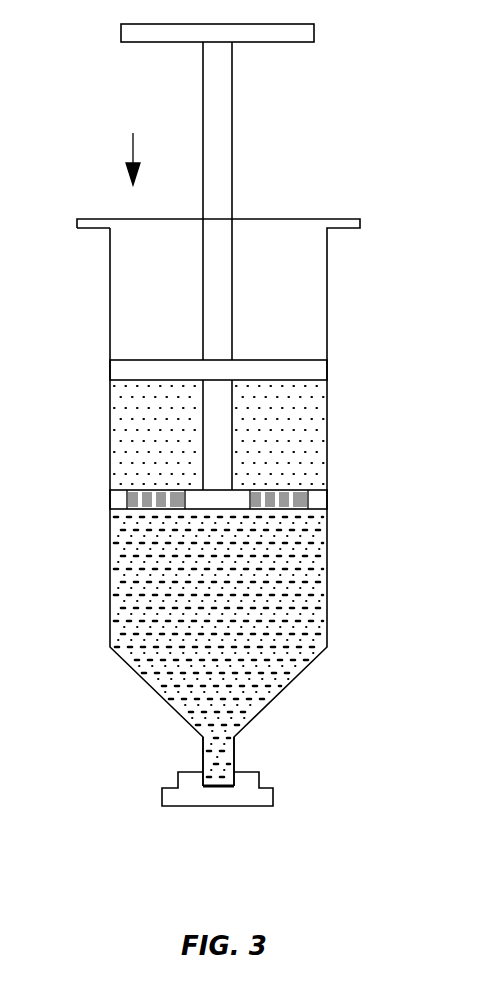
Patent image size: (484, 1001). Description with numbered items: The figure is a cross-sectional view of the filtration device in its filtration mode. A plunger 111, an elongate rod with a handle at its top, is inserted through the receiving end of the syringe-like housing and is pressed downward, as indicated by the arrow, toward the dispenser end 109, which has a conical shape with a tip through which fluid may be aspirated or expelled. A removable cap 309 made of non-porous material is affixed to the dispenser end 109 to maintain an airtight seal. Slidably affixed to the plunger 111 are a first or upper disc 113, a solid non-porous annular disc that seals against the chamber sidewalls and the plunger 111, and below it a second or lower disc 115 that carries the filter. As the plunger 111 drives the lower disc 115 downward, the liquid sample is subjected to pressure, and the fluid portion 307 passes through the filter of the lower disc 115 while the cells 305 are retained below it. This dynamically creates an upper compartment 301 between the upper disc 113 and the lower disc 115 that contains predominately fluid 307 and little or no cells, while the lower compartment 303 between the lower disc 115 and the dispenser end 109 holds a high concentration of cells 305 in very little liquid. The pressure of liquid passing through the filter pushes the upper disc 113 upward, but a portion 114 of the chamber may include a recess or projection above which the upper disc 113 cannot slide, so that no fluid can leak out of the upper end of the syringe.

The plunger 111 is at (218, 143).
The portion of the chamber of the syringe 114 is at (128, 283).
The first or upper disc 113 is at (307, 369).
The fluid portion 307 is at (148, 433).
The upper compartment 301 is at (352, 377).
The second or lower disc 115 is at (315, 500).
The lower compartment 303 is at (350, 508).
The cells 305 is at (182, 627).
The dispenser end 109 is at (203, 750).
The removable cap 309 is at (255, 795).